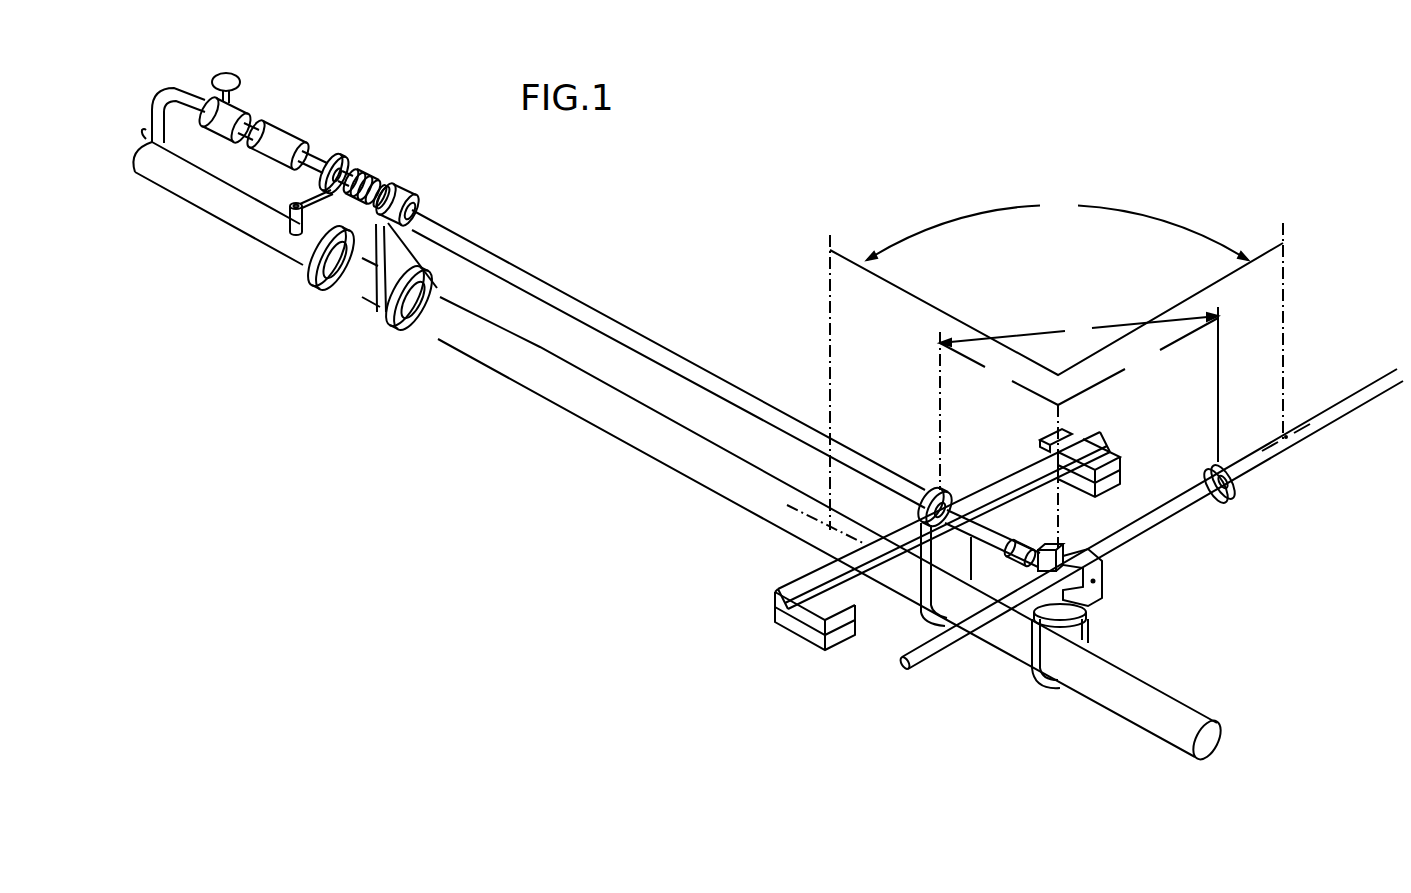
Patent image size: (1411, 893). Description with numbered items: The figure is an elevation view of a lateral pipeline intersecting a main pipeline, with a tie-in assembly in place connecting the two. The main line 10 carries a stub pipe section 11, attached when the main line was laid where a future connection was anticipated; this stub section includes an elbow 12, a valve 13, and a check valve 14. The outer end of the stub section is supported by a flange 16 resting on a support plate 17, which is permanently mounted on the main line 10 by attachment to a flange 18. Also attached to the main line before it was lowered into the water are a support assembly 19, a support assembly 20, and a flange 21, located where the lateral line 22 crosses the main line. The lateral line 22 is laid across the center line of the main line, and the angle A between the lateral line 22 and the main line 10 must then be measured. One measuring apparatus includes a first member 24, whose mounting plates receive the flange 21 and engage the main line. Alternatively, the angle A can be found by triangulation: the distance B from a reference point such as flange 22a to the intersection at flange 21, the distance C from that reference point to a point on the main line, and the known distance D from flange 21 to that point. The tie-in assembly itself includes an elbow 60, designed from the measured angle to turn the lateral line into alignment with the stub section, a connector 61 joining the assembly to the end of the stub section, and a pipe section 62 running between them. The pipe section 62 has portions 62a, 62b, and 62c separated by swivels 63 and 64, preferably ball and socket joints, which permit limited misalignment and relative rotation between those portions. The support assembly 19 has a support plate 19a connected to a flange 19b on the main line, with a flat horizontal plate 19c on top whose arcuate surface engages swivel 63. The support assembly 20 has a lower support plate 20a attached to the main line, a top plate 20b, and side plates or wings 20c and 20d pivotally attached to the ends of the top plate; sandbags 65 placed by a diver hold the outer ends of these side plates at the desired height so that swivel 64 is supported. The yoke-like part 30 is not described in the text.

The main line 10 is at (597, 424).
The stub pipe section 11 is at (268, 103).
The elbow 12 is at (170, 87).
The valve 13 is at (222, 128).
The check valve 14 is at (290, 135).
The flange 16 is at (341, 161).
The support plate 17 is at (301, 236).
The flange 18 is at (303, 280).
The support assembly 19 is at (418, 293).
The support plate 19a is at (412, 252).
The flange 19b is at (403, 329).
The flat horizontal plate 19c is at (377, 228).
The support assembly 20 is at (935, 537).
The lower support plate 20a is at (920, 621).
The top plate 20b is at (917, 527).
The side plate 20c is at (797, 589).
The side plate 20d is at (1101, 433).
The flange 21 is at (1034, 680).
The lateral line 22 is at (1151, 519).
The flange 22a is at (1233, 500).
The first member 24 is at (1098, 634).
The yoke connector 30 is at (1112, 585).
The elbow 60 is at (1027, 546).
The connector 61 is at (382, 168).
The pipe section 62 is at (705, 373).
The portion of pipe section 62a is at (388, 188).
The portion of pipe section 62b is at (551, 284).
The portion of pipe section 62c is at (995, 545).
The swivel 63 is at (417, 196).
The swivel 64 is at (943, 490).
The sandbags 65 is at (818, 645).
The angle A is at (1056, 285).
The distance B is at (1138, 361).
The distance C is at (1079, 329).
The distance D is at (999, 374).